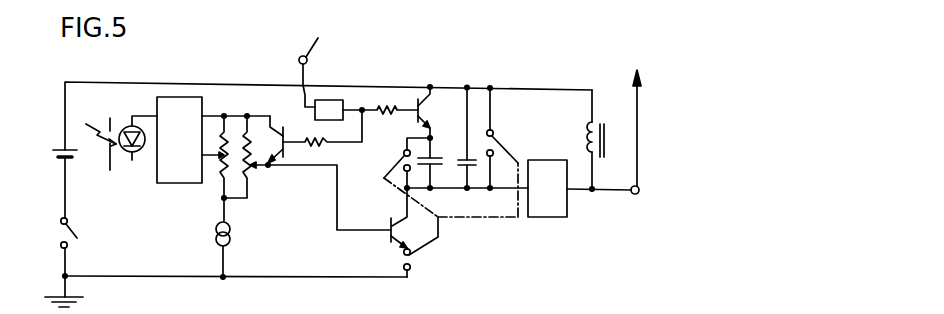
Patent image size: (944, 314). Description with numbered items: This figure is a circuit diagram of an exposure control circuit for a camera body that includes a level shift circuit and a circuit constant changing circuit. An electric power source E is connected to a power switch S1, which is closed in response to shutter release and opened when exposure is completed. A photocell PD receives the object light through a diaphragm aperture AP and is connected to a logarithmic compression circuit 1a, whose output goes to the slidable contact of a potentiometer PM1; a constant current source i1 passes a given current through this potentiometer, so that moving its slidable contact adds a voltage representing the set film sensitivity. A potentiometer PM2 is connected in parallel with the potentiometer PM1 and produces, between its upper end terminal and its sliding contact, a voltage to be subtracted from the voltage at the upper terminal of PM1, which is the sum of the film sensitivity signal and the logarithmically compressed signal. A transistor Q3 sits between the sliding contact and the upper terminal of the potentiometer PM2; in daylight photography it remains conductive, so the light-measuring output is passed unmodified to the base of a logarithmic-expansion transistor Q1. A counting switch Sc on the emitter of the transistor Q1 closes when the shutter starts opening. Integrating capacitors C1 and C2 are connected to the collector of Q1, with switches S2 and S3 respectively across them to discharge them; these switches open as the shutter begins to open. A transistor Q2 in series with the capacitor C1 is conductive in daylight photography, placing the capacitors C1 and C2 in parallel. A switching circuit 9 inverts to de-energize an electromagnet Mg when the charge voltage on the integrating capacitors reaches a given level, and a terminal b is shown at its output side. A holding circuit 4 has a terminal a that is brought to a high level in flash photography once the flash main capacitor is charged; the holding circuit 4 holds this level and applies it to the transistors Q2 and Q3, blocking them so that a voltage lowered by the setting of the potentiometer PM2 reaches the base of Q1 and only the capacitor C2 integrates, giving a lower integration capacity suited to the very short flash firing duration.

The electric power source E is at (57, 150).
The power switch S1 is at (86, 238).
The diaphragm aperture AP is at (110, 118).
The photocell PD is at (128, 158).
The logarithmic compression circuit 1a is at (188, 96).
The potentiometer PM1 is at (215, 170).
The potentiometer PM2 is at (246, 171).
The constant current source i1 is at (215, 241).
The transistor Q3 is at (286, 115).
The terminal a is at (312, 59).
The holding circuit 4 is at (345, 100).
The transistor Q2 is at (442, 113).
The integrating capacitor C1 is at (431, 140).
The switch S2 is at (403, 154).
The logarithmic-expansion transistor Q1 is at (390, 217).
The counting switch Sc is at (400, 258).
The integrating capacitor C2 is at (480, 167).
The switch S3 is at (495, 138).
The switching circuit 9 is at (537, 160).
The electromagnet Mg is at (608, 142).
The terminal b is at (639, 193).